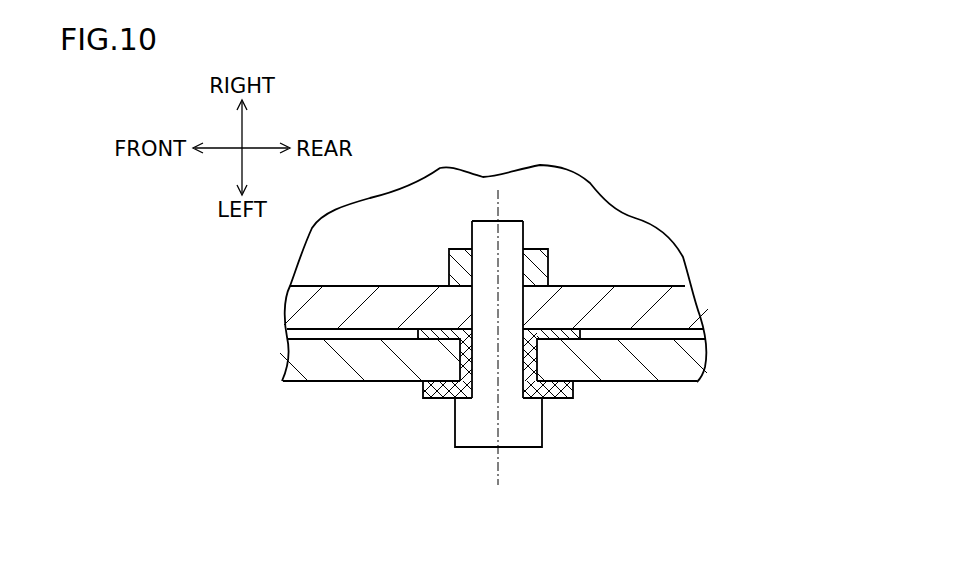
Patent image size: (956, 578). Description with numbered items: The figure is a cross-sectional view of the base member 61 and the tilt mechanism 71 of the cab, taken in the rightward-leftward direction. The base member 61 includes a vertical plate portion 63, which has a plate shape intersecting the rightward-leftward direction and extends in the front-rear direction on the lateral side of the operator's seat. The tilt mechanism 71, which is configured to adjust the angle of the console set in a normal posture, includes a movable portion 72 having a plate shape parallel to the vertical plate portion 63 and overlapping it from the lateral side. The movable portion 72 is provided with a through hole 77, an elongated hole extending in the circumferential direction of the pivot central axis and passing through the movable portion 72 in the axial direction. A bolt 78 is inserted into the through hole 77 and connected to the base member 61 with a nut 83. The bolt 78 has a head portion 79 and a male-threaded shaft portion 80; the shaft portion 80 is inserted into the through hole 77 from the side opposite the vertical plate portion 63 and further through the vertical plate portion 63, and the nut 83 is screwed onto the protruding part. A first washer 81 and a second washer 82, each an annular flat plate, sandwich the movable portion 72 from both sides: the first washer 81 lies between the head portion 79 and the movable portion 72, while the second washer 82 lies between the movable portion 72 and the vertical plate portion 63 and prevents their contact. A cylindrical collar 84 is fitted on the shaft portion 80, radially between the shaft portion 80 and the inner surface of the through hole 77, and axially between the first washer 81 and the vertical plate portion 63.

The base member 61 is at (286, 305).
The vertical plate portion 63 is at (677, 310).
The tilt mechanism 71 is at (710, 357).
The movable portion 72 is at (310, 358).
The through hole 77 is at (473, 375).
The bolt 78 is at (456, 449).
The head portion 79 is at (515, 425).
The shaft portion 80 is at (487, 234).
The first washer 81 is at (553, 392).
The second washer 82 is at (568, 333).
The nut 83 is at (536, 262).
The collar 84 is at (467, 353).